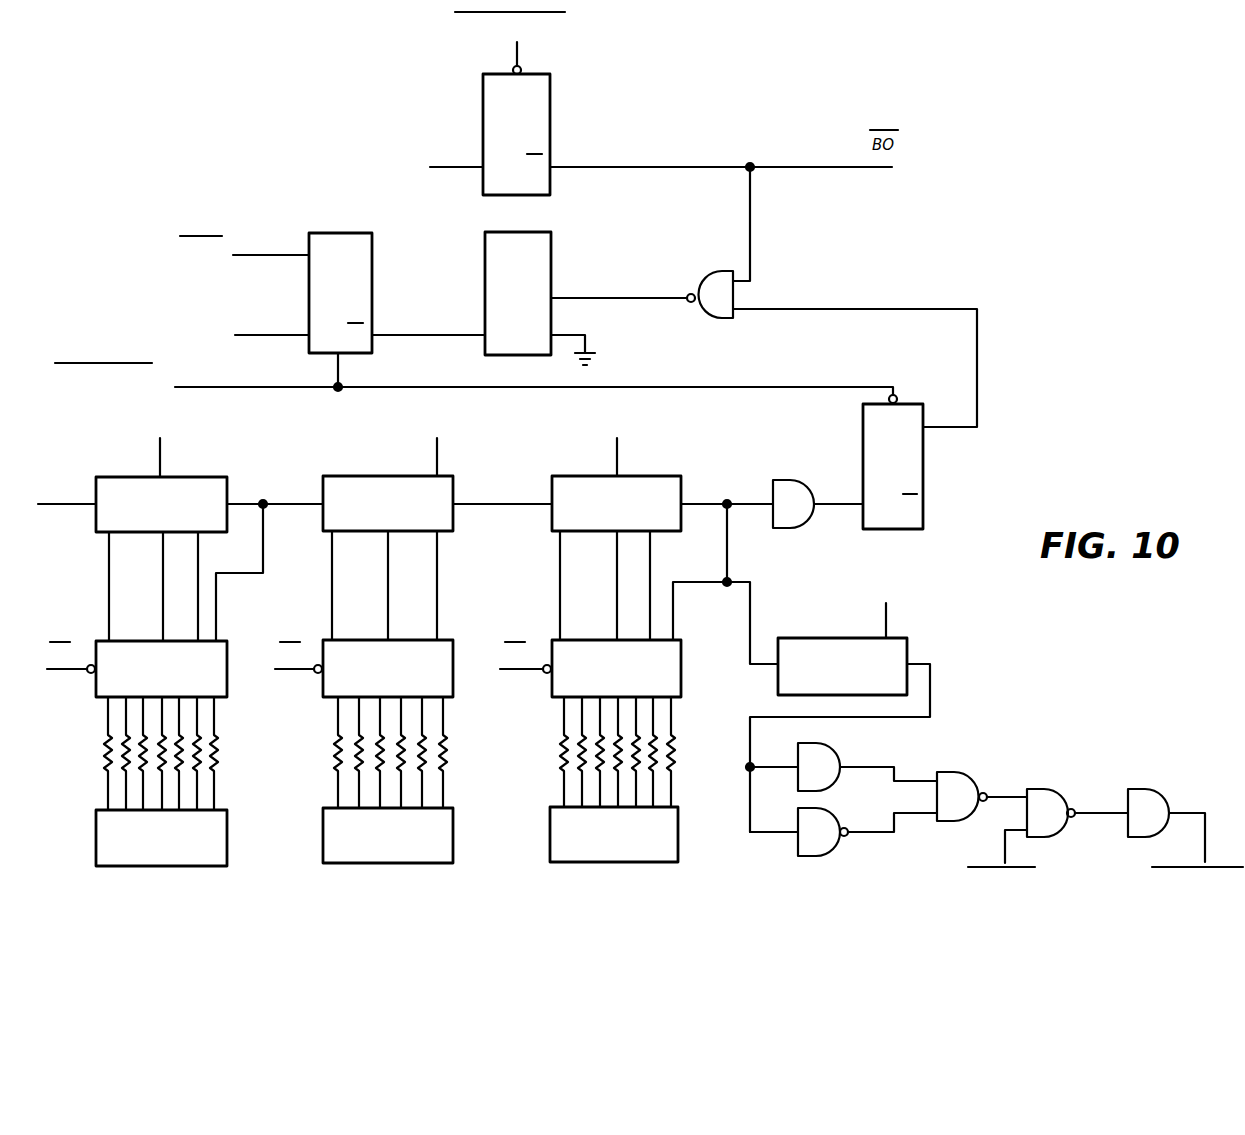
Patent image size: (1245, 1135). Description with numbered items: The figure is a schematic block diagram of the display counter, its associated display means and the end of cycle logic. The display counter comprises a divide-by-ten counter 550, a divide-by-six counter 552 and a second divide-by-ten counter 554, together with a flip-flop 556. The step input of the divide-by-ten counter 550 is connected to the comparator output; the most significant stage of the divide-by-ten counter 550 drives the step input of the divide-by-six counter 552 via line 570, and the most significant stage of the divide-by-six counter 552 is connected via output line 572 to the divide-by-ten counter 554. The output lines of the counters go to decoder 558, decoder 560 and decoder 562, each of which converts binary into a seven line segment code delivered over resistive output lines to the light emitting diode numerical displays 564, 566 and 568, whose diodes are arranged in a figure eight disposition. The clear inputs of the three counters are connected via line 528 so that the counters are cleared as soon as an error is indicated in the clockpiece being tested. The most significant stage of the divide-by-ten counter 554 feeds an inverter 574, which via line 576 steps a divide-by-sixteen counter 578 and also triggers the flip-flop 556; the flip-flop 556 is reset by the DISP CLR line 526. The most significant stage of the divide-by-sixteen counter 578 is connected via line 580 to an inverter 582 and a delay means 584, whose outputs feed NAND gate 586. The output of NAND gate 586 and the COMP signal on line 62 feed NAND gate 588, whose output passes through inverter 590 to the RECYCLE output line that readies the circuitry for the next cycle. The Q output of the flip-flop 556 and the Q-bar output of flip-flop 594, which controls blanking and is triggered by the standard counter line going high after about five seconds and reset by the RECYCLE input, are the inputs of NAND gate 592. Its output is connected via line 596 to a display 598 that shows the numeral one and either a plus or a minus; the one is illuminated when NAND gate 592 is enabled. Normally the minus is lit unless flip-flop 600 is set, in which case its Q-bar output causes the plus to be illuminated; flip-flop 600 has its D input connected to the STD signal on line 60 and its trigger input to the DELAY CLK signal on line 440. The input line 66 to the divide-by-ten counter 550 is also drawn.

The flip-flop 594 is at (538, 194).
The flip-flop 600 is at (338, 233).
The STD signal line 60 is at (265, 255).
The DELAY CLK signal line 440 is at (268, 335).
The DISP CLR line 526 is at (218, 387).
The display 598 is at (540, 240).
The line 596 is at (636, 298).
The NAND gate 592 is at (735, 315).
The flip-flop 556 is at (897, 529).
The inverter 574 is at (803, 486).
The input line 66 is at (40, 504).
The ÷10 counter 550 is at (108, 532).
The line 528 is at (160, 455).
The line 570 is at (288, 504).
The ÷6 counter 552 is at (335, 531).
The output line 572 is at (500, 504).
The ÷10 counter 554 is at (560, 531).
The decoder 558 is at (222, 645).
The decoder 560 is at (450, 692).
The decoder 562 is at (675, 690).
The light emitting diode numerical display 564 is at (212, 858).
The light emitting diode numerical display 566 is at (447, 855).
The light emitting diode numerical display 568 is at (660, 855).
The line 576 is at (755, 592).
The ÷16 counter 578 is at (905, 645).
The line 580 is at (932, 698).
The inverter 582 is at (830, 750).
The delay means 584 is at (828, 855).
The NAND gate 586 is at (970, 778).
The NAND gate 588 is at (1050, 792).
The inverter 590 is at (1150, 792).
The COMP line 62 is at (1005, 848).